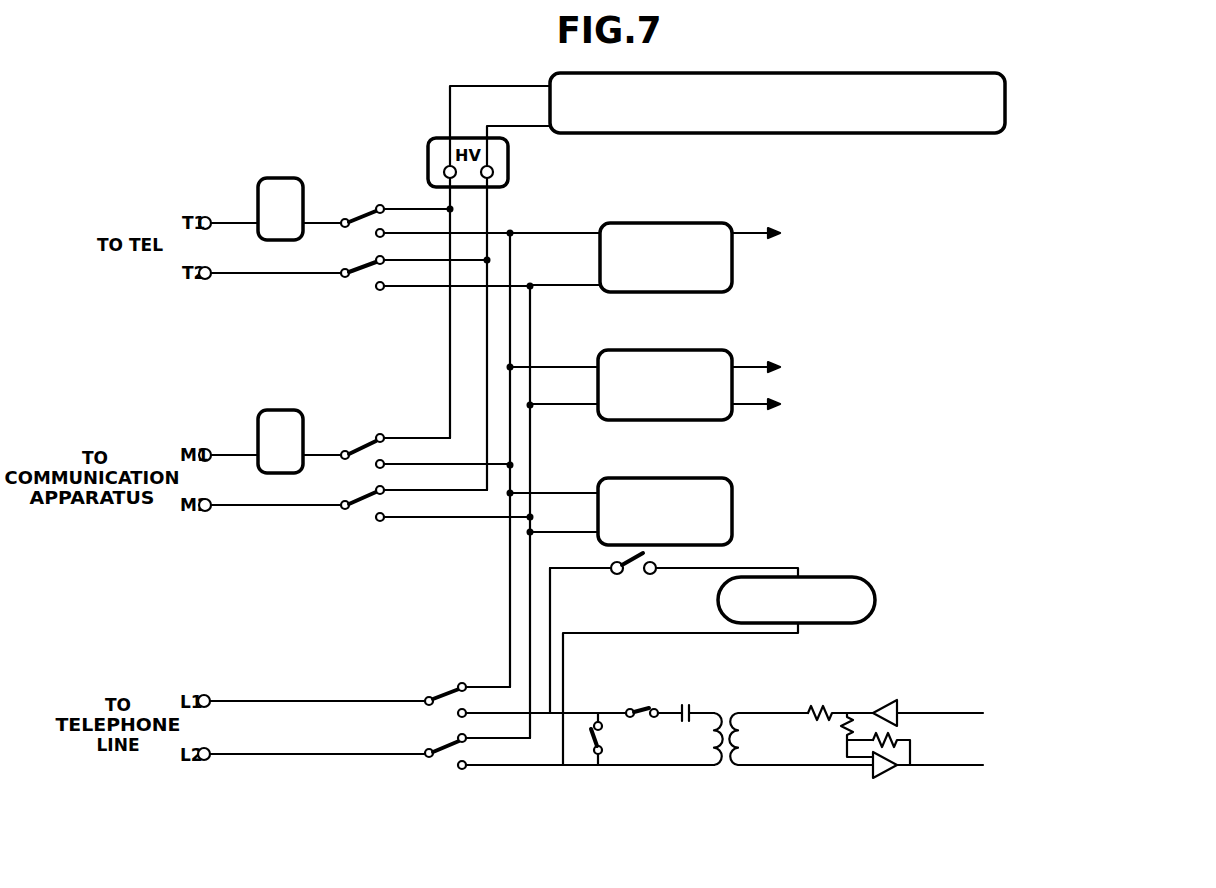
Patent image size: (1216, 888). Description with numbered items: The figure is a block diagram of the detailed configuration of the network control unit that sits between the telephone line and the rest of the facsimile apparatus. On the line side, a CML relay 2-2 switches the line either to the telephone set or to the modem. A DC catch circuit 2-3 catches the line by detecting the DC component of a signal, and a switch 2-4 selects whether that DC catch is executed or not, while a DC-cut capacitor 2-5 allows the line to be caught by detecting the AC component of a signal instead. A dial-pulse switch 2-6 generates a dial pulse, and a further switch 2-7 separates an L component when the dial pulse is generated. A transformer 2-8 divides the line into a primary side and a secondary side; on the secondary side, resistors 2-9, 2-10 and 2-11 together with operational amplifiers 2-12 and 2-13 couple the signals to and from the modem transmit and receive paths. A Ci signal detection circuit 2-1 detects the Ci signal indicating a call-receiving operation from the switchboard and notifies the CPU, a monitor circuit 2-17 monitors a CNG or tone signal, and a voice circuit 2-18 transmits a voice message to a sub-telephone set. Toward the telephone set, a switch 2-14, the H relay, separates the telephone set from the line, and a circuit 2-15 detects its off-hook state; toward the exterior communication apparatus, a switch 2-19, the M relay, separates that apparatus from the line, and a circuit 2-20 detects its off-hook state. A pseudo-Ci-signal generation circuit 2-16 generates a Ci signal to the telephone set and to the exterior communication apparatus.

The Ci signal detection circuit 2-1 is at (732, 277).
The CML relay 2-2 is at (442, 760).
The DC catch circuit 2-3 is at (830, 577).
The switch 2-4 is at (674, 577).
The DC-cut capacitor 2-5 is at (693, 707).
The switch SW1 2-6 is at (588, 736).
The switch SW2 2-7 is at (640, 708).
The transformer 2-8 is at (727, 766).
The resistor 2-9 is at (818, 705).
The resistor 2-10 is at (845, 735).
The resistor 2-11 is at (908, 741).
The operational amplifier 2-12 is at (889, 700).
The operational amplifier 2-13 is at (884, 778).
The switch 2-14 is at (362, 279).
The off-hook detection circuit 2-15 is at (258, 197).
The pseudo-Ci-signal generation circuit 2-16 is at (670, 133).
The monitor circuit 2-17 is at (732, 416).
The voice circuit 2-18 is at (732, 512).
The switch 2-19 is at (362, 512).
The off-hook detection circuit 2-20 is at (258, 429).